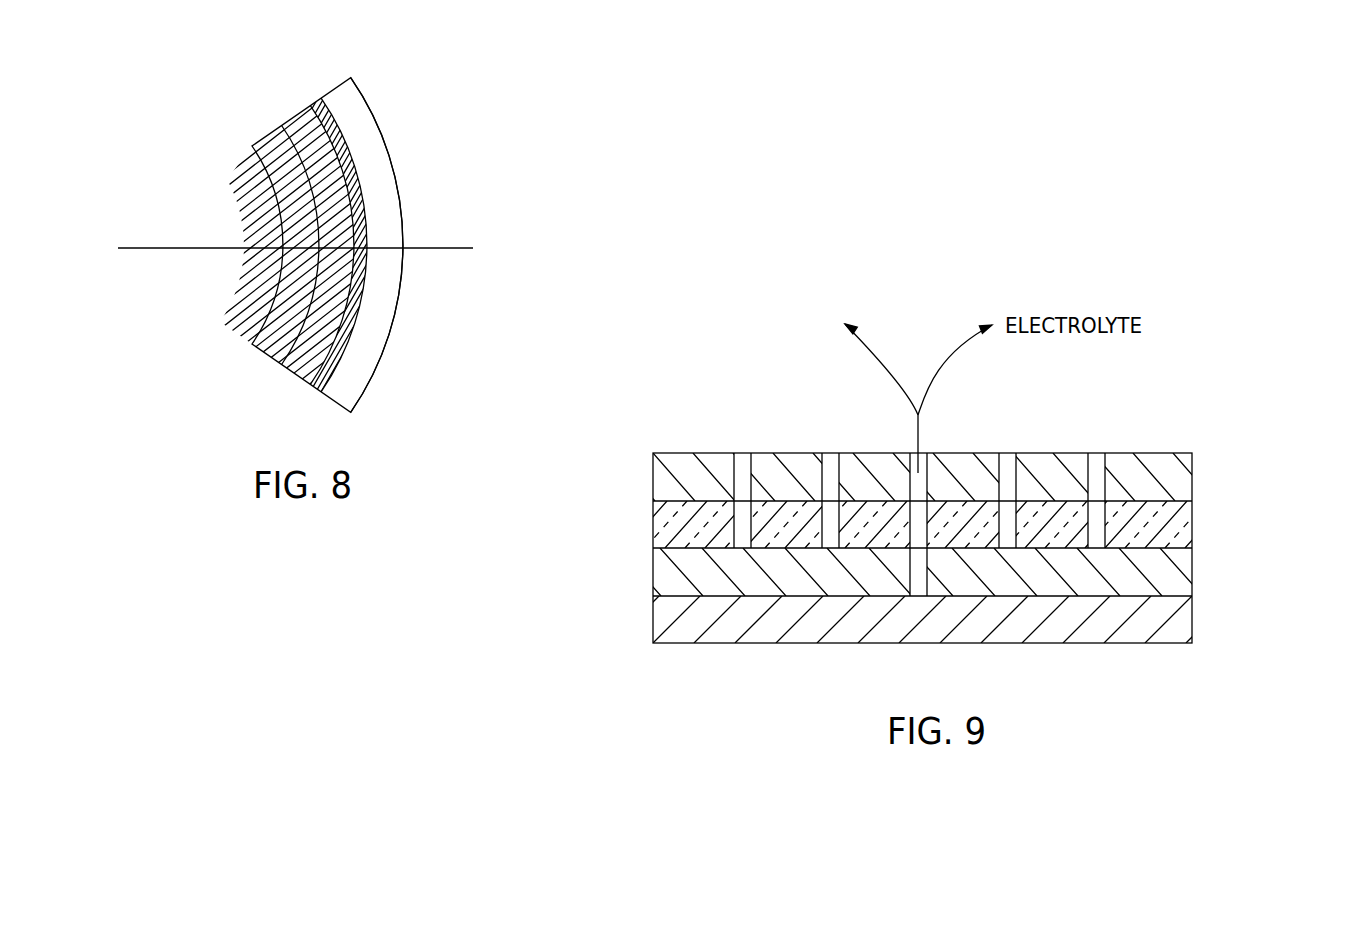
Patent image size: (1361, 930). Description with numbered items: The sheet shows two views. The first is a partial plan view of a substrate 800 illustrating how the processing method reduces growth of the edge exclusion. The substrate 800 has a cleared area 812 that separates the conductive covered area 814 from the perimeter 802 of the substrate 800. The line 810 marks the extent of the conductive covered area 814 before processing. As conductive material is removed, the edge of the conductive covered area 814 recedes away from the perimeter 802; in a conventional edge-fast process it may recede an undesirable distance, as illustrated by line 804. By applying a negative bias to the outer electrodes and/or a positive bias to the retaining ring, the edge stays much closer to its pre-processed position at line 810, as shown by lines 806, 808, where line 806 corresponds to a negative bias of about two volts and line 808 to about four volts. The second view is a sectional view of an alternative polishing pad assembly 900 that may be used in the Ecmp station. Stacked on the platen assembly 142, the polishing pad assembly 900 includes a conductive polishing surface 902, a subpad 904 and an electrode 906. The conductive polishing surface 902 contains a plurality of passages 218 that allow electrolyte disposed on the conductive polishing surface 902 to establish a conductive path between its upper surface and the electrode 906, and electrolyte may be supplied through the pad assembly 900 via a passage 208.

In FIG. 8, the substrate 800 is at (360, 77).
In FIG. 8, the perimeter 802 is at (372, 112).
In FIG. 8, the line 804 is at (247, 157).
In FIG. 8, the line 806 is at (307, 183).
In FIG. 8, the line 808 is at (347, 212).
In FIG. 8, the line 810 is at (363, 183).
In FIG. 8, the cleared area 812 is at (396, 219).
In FIG. 8, the conductive covered area 814 is at (315, 297).
In FIG. 9, the polishing pad assembly 900 is at (635, 525).
In FIG. 9, the conductive polishing surface 902 is at (1173, 490).
In FIG. 9, the subpad 904 is at (1173, 538).
In FIG. 9, the electrode 906 is at (1173, 585).
In FIG. 9, the platen assembly 142 is at (1173, 633).
In FIG. 9, the passages 218 is at (752, 488).
In FIG. 9, the passage 208 is at (928, 473).